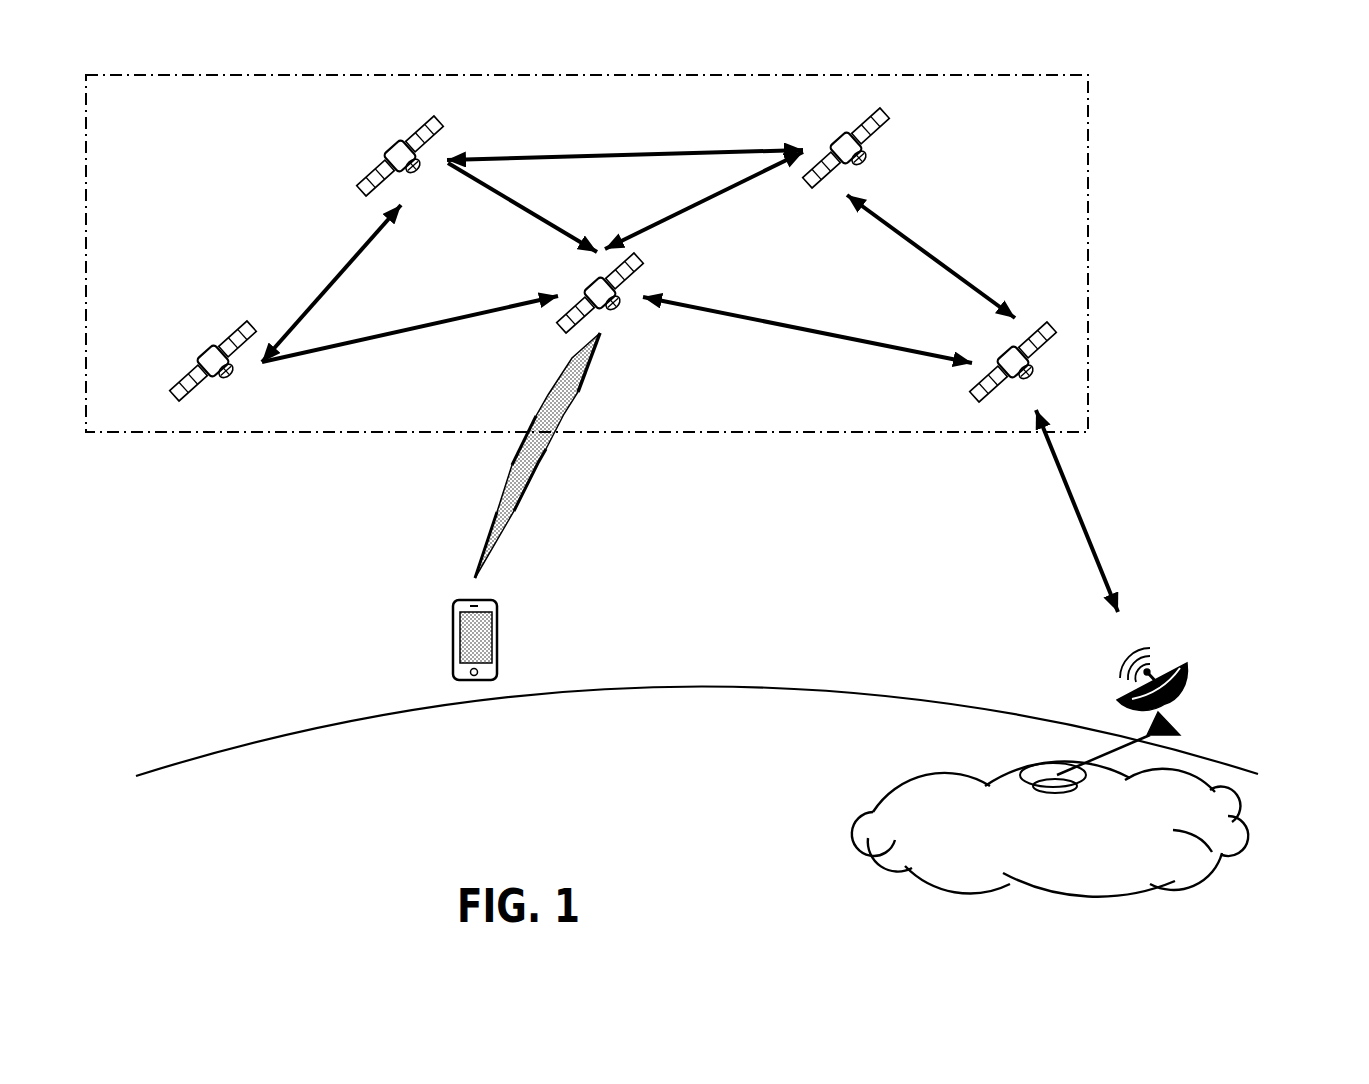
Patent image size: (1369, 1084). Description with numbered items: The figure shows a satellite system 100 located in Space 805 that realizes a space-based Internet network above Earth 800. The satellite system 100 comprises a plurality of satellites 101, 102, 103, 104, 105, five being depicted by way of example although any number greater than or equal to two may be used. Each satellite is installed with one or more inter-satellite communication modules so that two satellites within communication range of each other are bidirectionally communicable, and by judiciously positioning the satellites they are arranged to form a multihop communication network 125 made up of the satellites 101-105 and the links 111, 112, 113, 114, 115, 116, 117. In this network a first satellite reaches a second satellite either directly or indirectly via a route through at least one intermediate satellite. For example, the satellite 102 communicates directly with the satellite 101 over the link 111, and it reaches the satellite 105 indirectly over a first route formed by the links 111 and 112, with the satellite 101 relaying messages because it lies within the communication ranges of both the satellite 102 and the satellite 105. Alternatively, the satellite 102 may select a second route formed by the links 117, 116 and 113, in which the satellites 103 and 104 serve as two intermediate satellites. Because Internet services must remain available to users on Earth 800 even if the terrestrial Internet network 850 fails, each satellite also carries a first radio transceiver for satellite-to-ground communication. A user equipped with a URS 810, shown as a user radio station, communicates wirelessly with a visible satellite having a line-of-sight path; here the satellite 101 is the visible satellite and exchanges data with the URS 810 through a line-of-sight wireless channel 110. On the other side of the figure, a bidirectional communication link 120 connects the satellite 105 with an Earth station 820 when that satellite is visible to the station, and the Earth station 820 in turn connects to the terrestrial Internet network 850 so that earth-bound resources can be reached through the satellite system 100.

The satellite system 100 is at (111, 433).
The satellite 101 is at (583, 273).
The satellite 102 is at (217, 320).
The satellite 103 is at (393, 128).
The satellite 104 is at (840, 120).
The satellite 105 is at (998, 337).
The line-of-sight wireless channel 110 is at (531, 470).
The link 111 is at (408, 328).
The link 112 is at (820, 333).
The link 113 is at (888, 228).
The link 114 is at (720, 193).
The link 115 is at (562, 227).
The link 116 is at (597, 153).
The link 117 is at (352, 253).
The bidirectional communication link 120 is at (1073, 495).
The multihop communication network 125 is at (1233, 87).
The Earth 800 is at (140, 823).
The Space 805 is at (1205, 298).
The URS 810 is at (480, 672).
The Earth station 820 is at (1173, 730).
The terrestrial Internet network 850 is at (908, 807).